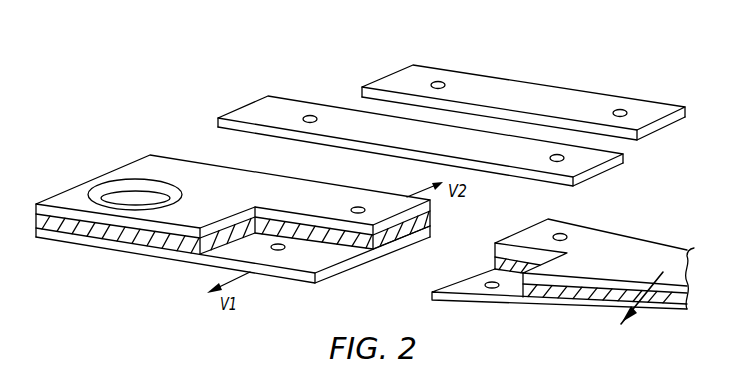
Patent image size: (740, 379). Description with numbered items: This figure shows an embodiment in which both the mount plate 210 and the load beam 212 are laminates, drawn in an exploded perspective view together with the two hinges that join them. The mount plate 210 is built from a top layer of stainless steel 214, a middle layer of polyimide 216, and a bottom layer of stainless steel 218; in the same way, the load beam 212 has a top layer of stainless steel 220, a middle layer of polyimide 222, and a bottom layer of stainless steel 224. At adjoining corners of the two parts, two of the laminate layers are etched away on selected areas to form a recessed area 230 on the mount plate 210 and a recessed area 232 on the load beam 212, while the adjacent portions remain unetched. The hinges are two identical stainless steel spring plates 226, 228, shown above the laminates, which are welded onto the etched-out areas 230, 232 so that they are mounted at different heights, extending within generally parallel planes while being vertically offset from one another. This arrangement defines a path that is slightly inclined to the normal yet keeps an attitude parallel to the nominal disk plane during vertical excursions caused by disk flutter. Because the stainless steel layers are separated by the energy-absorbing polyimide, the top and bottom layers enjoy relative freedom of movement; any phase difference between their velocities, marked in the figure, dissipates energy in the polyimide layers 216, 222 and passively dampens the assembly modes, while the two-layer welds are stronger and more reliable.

The mount plate 210 is at (180, 167).
The load beam 212 is at (664, 312).
The top layer of stainless steel 214 is at (80, 193).
The middle layer of polyimide 216 is at (103, 234).
The bottom layer of stainless steel 218 is at (348, 268).
The top layer of stainless steel 220 is at (630, 247).
The middle layer of polyimide 222 is at (567, 296).
The bottom layer of stainless steel 224 is at (455, 299).
The spring plate 226 is at (472, 145).
The spring plate 228 is at (520, 93).
The recessed area 230 is at (308, 263).
The recessed area 232 is at (465, 287).